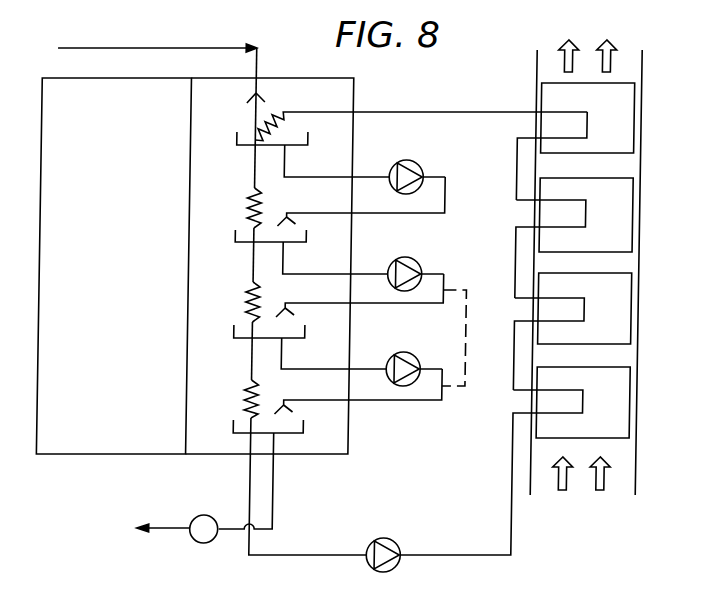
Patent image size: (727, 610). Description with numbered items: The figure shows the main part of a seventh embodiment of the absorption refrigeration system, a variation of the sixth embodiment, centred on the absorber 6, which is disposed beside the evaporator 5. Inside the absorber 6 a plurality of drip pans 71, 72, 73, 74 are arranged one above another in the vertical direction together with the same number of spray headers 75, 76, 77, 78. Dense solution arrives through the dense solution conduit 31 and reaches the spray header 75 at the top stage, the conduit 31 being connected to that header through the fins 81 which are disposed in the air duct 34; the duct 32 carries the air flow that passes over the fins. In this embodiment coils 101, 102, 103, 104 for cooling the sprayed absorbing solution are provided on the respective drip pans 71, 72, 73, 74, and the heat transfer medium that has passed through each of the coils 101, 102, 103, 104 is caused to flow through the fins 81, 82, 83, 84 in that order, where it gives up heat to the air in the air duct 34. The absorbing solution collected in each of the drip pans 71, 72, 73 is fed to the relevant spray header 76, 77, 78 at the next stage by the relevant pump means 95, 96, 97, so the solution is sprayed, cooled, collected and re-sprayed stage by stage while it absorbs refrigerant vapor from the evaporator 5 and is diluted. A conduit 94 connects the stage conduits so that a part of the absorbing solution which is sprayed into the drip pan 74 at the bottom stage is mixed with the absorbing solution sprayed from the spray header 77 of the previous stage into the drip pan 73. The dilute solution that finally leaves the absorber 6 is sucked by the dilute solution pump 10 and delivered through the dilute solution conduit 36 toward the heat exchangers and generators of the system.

The evaporator 5 is at (108, 448).
The absorber 6 is at (326, 452).
The dilute solution pump 10 is at (212, 544).
The dense solution conduit 31 is at (140, 48).
The air duct 32 is at (644, 449).
The air duct 34 is at (622, 467).
The dilute solution conduit 36 is at (170, 531).
The drip pan 71 is at (243, 148).
The drip pan 72 is at (243, 245).
The drip pan 73 is at (243, 341).
The drip pan 74 is at (238, 434).
The spray header 75 is at (268, 96).
The spray header 76 is at (300, 226).
The spray header 77 is at (300, 321).
The spray header 78 is at (301, 418).
The fins 81 is at (640, 113).
The fins 82 is at (637, 216).
The fins 83 is at (636, 306).
The fins 84 is at (636, 406).
The conduit 94 is at (470, 334).
The pump means 95 is at (419, 166).
The pump means 96 is at (420, 263).
The pump means 97 is at (413, 358).
The coil 101 is at (258, 125).
The coil 102 is at (251, 207).
The coil 103 is at (251, 305).
The coil 104 is at (251, 400).